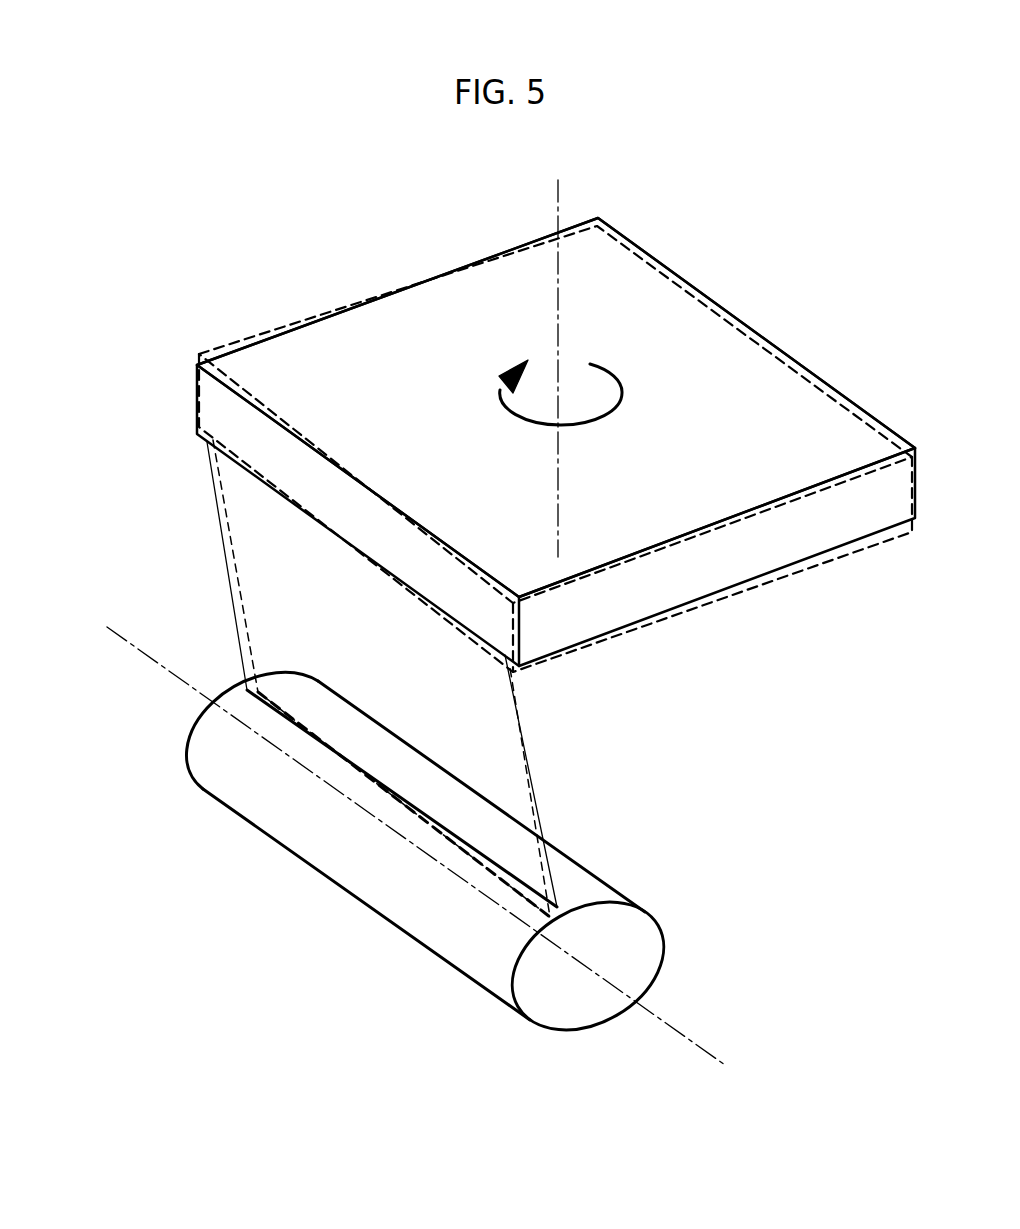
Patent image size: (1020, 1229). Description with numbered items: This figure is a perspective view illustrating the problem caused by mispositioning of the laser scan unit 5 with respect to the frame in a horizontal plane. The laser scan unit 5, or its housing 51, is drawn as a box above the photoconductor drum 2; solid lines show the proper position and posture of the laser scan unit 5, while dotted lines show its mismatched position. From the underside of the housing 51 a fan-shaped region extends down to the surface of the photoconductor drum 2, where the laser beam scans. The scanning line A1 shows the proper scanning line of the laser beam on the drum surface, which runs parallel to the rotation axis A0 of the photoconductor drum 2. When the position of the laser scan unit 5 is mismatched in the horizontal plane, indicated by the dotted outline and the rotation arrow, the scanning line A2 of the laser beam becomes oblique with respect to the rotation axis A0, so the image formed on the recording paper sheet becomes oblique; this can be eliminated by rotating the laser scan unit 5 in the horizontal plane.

The laser scan unit 5 is at (280, 377).
The housing 51 is at (393, 335).
The photoconductor drum 2 is at (583, 895).
The rotation axis A0 is at (385, 830).
The scanning line A1 is at (320, 743).
The scanning line A2 is at (517, 887).